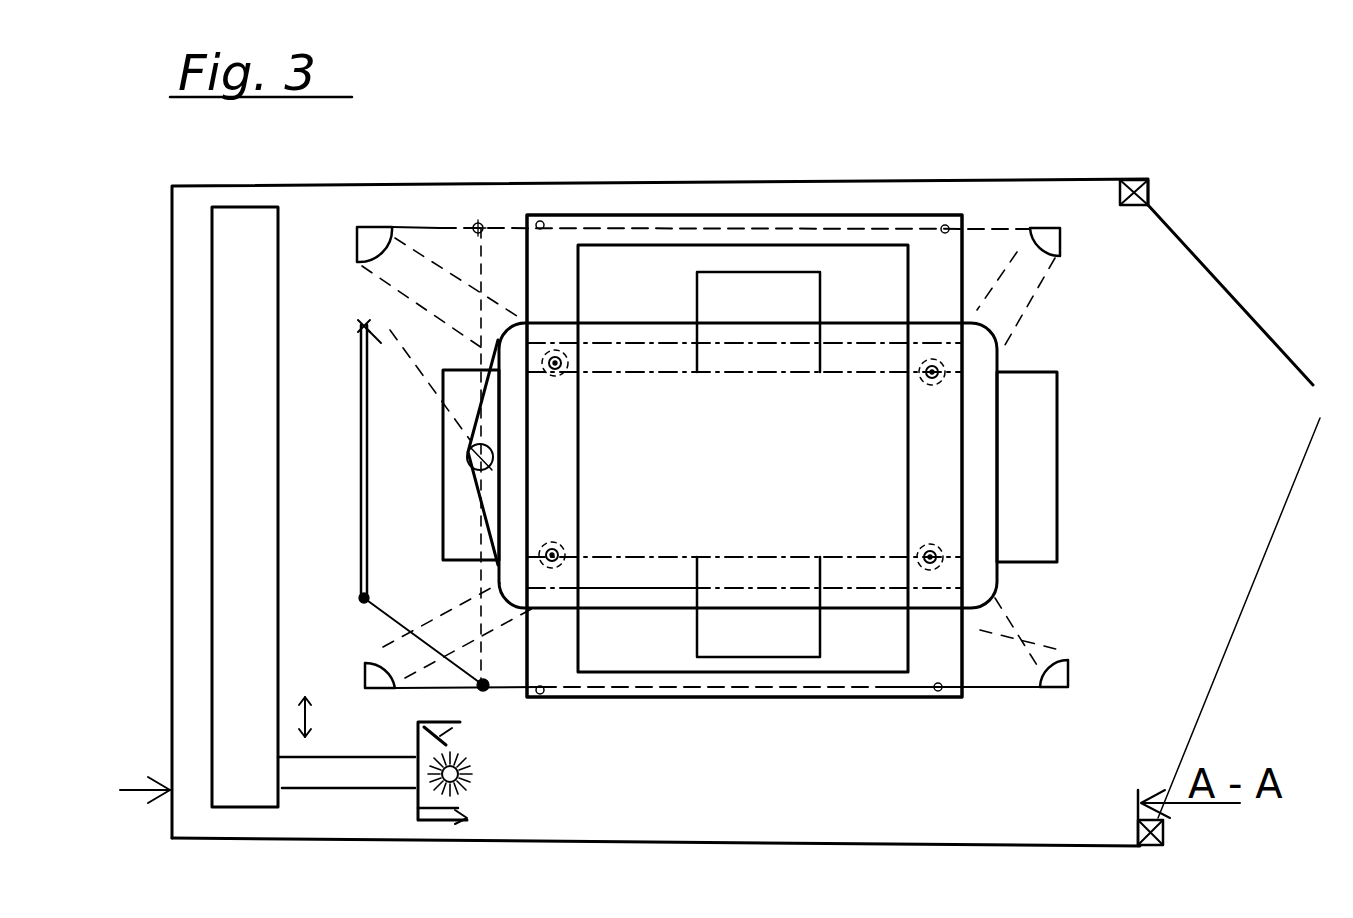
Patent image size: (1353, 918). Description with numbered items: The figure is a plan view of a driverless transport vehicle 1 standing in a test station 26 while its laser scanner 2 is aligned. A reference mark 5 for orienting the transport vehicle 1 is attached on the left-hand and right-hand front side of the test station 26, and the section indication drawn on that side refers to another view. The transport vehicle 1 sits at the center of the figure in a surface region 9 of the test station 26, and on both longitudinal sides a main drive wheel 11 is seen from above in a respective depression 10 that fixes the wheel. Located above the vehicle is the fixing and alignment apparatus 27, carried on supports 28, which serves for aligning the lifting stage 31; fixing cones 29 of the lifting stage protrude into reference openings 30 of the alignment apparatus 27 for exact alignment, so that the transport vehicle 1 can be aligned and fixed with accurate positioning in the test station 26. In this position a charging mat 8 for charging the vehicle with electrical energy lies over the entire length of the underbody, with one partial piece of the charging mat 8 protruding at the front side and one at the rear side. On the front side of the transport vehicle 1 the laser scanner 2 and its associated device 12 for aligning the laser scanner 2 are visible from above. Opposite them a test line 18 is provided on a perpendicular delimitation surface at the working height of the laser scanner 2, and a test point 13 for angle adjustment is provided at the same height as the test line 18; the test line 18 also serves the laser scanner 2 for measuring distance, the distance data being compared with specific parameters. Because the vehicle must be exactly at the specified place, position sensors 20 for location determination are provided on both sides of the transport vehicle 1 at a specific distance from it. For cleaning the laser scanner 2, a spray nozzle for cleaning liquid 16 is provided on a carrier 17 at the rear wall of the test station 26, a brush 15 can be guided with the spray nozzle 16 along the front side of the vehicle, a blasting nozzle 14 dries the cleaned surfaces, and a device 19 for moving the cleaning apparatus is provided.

The driverless transport vehicle 1 is at (950, 407).
The laser scanner 2 is at (490, 465).
The reference mark 5 is at (1245, 525).
The charging mat 8 is at (1047, 527).
The surface region 9 is at (913, 687).
The depression 10 is at (792, 647).
The main drive wheel 11 is at (800, 365).
The device for alignment of a laser scanner 12 is at (512, 442).
The test point 13 is at (483, 692).
The blasting nozzle 14 is at (468, 818).
The brush 15 is at (458, 776).
The spray nozzle for cleaning liquid 16 is at (432, 726).
The carrier 17 is at (392, 787).
The test line 18 is at (361, 490).
The device for moving the cleaning apparatus 19 is at (250, 257).
The position sensor 20 is at (363, 230).
The test station 26 is at (982, 180).
The fixing and alignment apparatus 27 is at (835, 217).
The supports 28 is at (955, 228).
The fixing cones 29 is at (923, 385).
The reference openings 30 is at (570, 552).
The lifting stage 31 is at (635, 590).